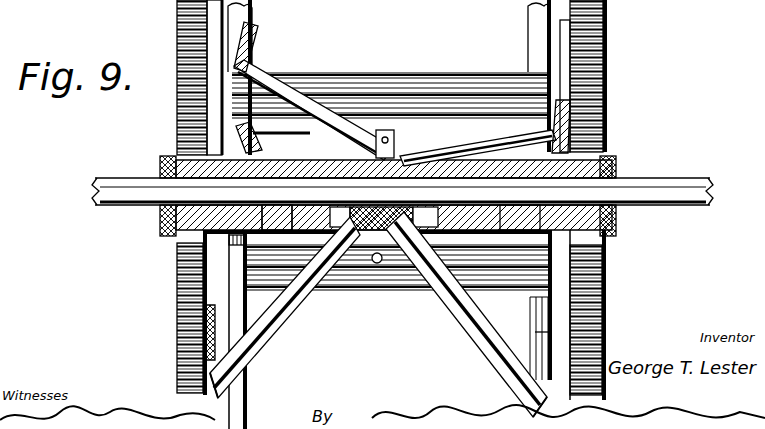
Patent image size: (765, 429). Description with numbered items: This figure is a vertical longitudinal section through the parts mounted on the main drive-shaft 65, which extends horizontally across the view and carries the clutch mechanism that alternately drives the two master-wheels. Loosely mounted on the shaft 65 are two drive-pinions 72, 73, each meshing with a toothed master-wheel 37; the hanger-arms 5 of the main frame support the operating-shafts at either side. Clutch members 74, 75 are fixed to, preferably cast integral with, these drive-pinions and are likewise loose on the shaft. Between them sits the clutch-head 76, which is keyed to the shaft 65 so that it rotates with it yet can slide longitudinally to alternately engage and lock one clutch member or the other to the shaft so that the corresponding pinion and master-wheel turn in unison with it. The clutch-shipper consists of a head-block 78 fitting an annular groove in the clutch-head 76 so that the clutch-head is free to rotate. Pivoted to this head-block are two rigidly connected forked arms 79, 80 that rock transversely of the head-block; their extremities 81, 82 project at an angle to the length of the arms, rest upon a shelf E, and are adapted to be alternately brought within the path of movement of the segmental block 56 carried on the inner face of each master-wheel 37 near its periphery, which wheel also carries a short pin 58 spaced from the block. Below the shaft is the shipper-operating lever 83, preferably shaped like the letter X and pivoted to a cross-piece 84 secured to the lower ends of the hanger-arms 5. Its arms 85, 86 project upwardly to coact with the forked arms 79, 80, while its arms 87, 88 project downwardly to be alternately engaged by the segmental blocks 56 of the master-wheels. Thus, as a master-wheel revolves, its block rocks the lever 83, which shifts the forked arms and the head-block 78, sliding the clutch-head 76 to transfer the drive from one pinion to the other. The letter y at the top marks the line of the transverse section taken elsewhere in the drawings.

The toothed master-wheel 37 is at (192, 97).
The segmental concentric block 56 is at (200, 333).
The short pin 58 is at (210, 276).
The drive-pinion 72 is at (178, 146).
The drive-pinion 73 is at (612, 150).
The main drive-shaft 65 is at (664, 187).
The forked arm 79 is at (267, 90).
The extremity of forked arm 81 is at (254, 40).
The head-block 78 is at (394, 134).
The forked arm 80 is at (483, 147).
The extremity of forked arm 82 is at (576, 118).
The clutch member 74 is at (279, 212).
The upwardly projecting arm 85 is at (338, 226).
The upwardly projecting arm 86 is at (418, 236).
The clutch member 75 is at (518, 210).
The clutch-head 76 is at (377, 263).
The cross-piece 84 is at (328, 280).
The downwardly projecting arm 87 is at (283, 357).
The shipper-operating lever 83 is at (436, 290).
The downwardly projecting arm 88 is at (481, 357).
The hanger-arms 5 is at (240, 400).
The shelf E is at (358, 87).
The section line yy y is at (400, 0).